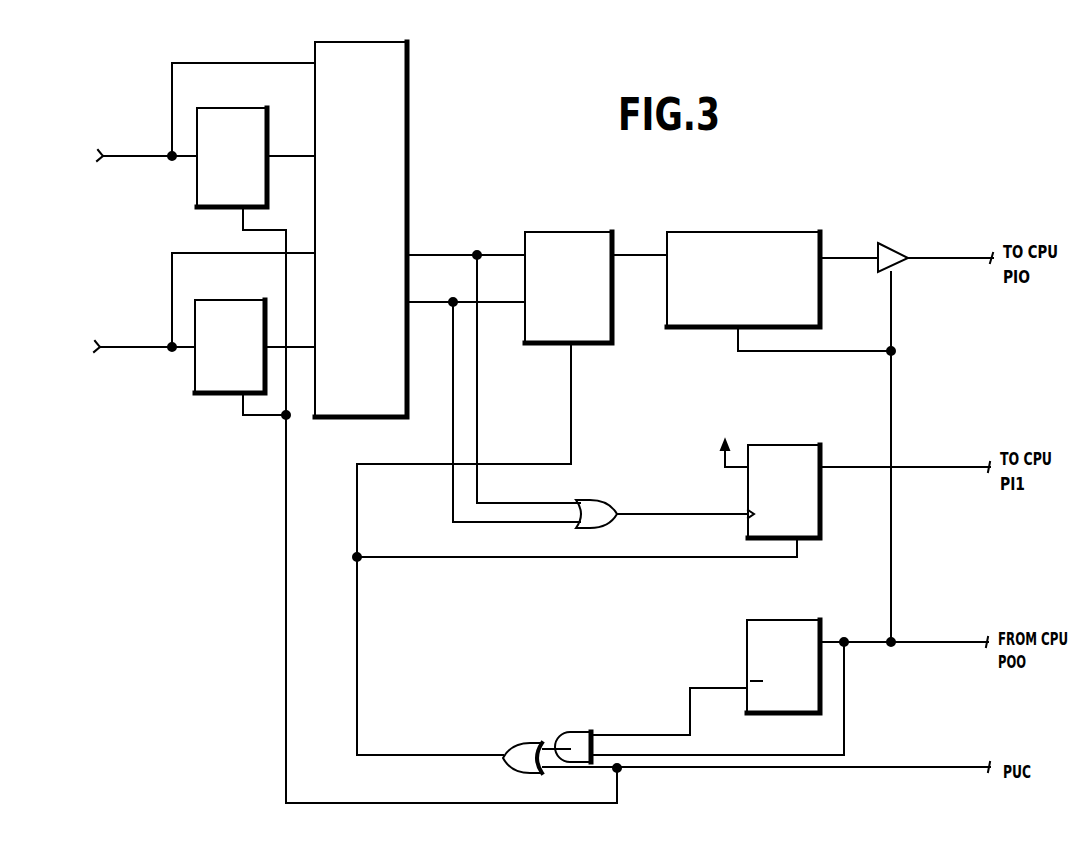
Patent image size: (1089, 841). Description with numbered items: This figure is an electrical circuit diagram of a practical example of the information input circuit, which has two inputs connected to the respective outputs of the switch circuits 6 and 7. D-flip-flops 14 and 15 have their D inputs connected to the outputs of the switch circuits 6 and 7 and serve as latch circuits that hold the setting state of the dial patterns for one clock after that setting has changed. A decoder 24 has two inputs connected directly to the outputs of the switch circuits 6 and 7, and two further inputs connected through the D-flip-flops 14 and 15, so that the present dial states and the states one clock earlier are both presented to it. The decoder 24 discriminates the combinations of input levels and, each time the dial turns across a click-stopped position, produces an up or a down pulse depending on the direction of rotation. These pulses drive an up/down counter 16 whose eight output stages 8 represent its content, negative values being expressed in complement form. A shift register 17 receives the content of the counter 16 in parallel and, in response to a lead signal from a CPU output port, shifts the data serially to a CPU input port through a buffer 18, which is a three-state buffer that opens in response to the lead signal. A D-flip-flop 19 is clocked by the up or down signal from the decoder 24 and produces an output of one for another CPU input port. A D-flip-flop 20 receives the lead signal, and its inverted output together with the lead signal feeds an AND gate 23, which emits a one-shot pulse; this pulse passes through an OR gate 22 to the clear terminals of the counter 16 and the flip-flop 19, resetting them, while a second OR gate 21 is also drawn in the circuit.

The switch circuit 6 is at (103, 155).
The switch circuit 7 is at (100, 347).
The 8-bit output stages 8 is at (648, 248).
The D-flip-flop 14 is at (237, 108).
The D-flip-flop 15 is at (225, 300).
The up/down counter 16 is at (562, 232).
The shift register 17 is at (748, 232).
The buffer 18 is at (893, 245).
The D-flip-flop 19 is at (786, 445).
The D-flip-flop 20 is at (802, 620).
The OR gate 21 is at (597, 500).
The OR gate 22 is at (527, 743).
The AND gate 23 is at (580, 732).
The decoder 24 is at (407, 121).